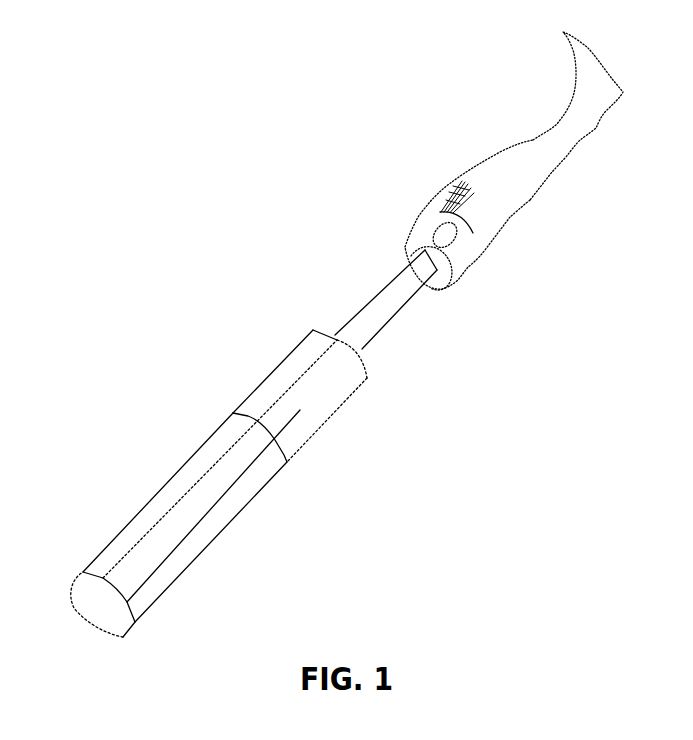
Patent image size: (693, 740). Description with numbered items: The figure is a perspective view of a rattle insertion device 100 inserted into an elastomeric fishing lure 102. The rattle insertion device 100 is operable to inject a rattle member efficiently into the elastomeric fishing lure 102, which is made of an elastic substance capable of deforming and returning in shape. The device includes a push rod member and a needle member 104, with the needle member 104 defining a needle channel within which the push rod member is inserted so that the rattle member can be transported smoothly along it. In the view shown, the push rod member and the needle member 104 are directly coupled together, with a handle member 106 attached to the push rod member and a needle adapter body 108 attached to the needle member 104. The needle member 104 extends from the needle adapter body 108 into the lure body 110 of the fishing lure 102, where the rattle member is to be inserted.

The rattle insertion device 100 is at (181, 390).
The elastomeric fishing lure 102 is at (505, 201).
The needle member 104 is at (378, 316).
The handle member 106 is at (243, 498).
The needle adapter body 108 is at (305, 399).
The lure body 110 is at (563, 154).